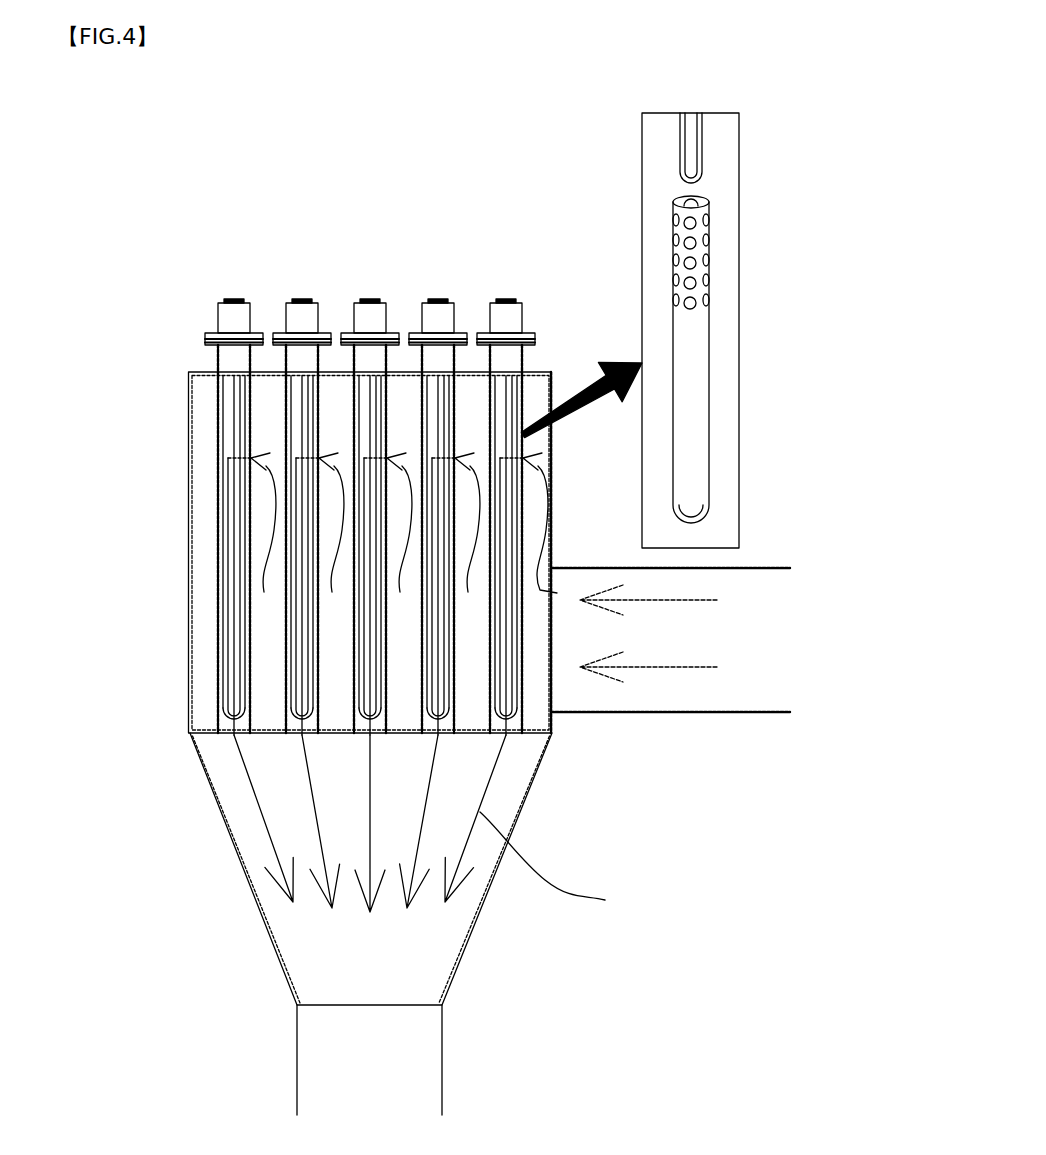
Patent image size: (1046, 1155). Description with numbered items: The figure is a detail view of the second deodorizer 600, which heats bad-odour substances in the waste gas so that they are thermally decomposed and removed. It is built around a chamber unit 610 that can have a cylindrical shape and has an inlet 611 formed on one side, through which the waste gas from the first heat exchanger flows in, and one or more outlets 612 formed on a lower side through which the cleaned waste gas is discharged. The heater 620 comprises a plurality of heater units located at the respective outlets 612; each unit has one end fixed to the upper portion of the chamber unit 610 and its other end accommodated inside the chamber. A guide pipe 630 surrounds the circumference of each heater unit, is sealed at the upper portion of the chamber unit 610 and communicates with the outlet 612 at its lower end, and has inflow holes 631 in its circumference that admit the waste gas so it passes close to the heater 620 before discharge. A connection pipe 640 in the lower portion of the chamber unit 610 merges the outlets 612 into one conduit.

The second deodorizer 600 is at (412, 236).
The chamber unit 610 is at (190, 395).
The inlet 611 is at (552, 670).
The outlets 612 is at (295, 735).
The heater 620 is at (223, 505).
The guide pipe 630 is at (218, 567).
The inflow holes 631 is at (218, 485).
The connection pipe 640 is at (242, 865).